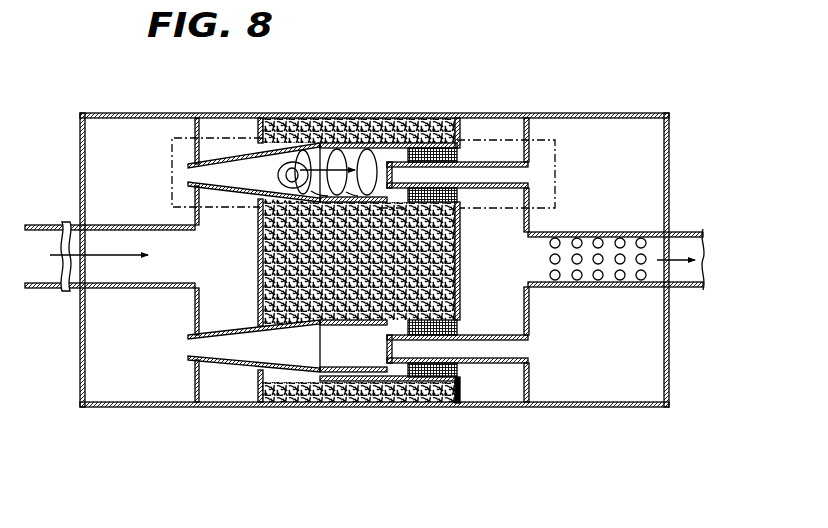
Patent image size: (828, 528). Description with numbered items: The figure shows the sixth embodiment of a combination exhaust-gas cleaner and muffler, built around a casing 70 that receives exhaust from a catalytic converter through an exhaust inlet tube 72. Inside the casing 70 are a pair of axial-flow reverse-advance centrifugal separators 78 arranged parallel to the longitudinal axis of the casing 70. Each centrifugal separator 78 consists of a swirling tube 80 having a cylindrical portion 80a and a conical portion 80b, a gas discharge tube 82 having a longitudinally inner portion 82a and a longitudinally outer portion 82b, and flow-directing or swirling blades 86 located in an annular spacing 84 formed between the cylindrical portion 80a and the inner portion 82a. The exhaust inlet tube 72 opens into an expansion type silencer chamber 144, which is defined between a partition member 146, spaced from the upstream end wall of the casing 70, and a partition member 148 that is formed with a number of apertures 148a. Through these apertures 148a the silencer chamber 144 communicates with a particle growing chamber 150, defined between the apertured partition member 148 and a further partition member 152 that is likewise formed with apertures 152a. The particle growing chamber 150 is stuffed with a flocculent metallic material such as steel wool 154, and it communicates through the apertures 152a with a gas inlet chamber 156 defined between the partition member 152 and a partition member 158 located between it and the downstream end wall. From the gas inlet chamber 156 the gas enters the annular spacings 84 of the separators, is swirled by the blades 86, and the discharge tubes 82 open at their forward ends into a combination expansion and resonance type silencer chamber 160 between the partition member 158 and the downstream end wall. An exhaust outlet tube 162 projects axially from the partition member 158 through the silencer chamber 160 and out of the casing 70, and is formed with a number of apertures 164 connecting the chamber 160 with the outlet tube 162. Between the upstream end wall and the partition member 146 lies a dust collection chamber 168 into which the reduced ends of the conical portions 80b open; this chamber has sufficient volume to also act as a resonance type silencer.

The casing 70 is at (167, 113).
The exhaust inlet tube 72 is at (58, 290).
The axial-flow reverse-advance centrifugal separator 78 is at (280, 117).
The swirling tube 80 is at (320, 143).
The cylindrical portion of swirling tube 80a is at (356, 150).
The conical portion of swirling tube 80b is at (235, 157).
The gas discharge tube 82 is at (480, 150).
The longitudinally inner portion of gas discharge tube 82a is at (413, 160).
The longitudinally outer portion of gas discharge tube 82b is at (502, 162).
The annular spacing 84 is at (390, 155).
The swirling blades 86 is at (460, 200).
The expansion type silencer chamber 144 is at (252, 273).
The partition member 146 is at (192, 377).
The apertured partition member 148 is at (252, 392).
The apertures 148a is at (258, 283).
The particle growing chamber 150 is at (380, 278).
The apertured partition member 152 is at (460, 397).
The apertures 152a is at (460, 295).
The steel wool 154 is at (258, 222).
The gas inlet chamber 156 is at (513, 278).
The partition member 158 is at (530, 387).
The combination expansion and resonance type silencer chamber 160 is at (630, 198).
The exhaust outlet tube 162 is at (683, 290).
The apertures 164 is at (580, 277).
The dust collection chamber 168 is at (152, 196).